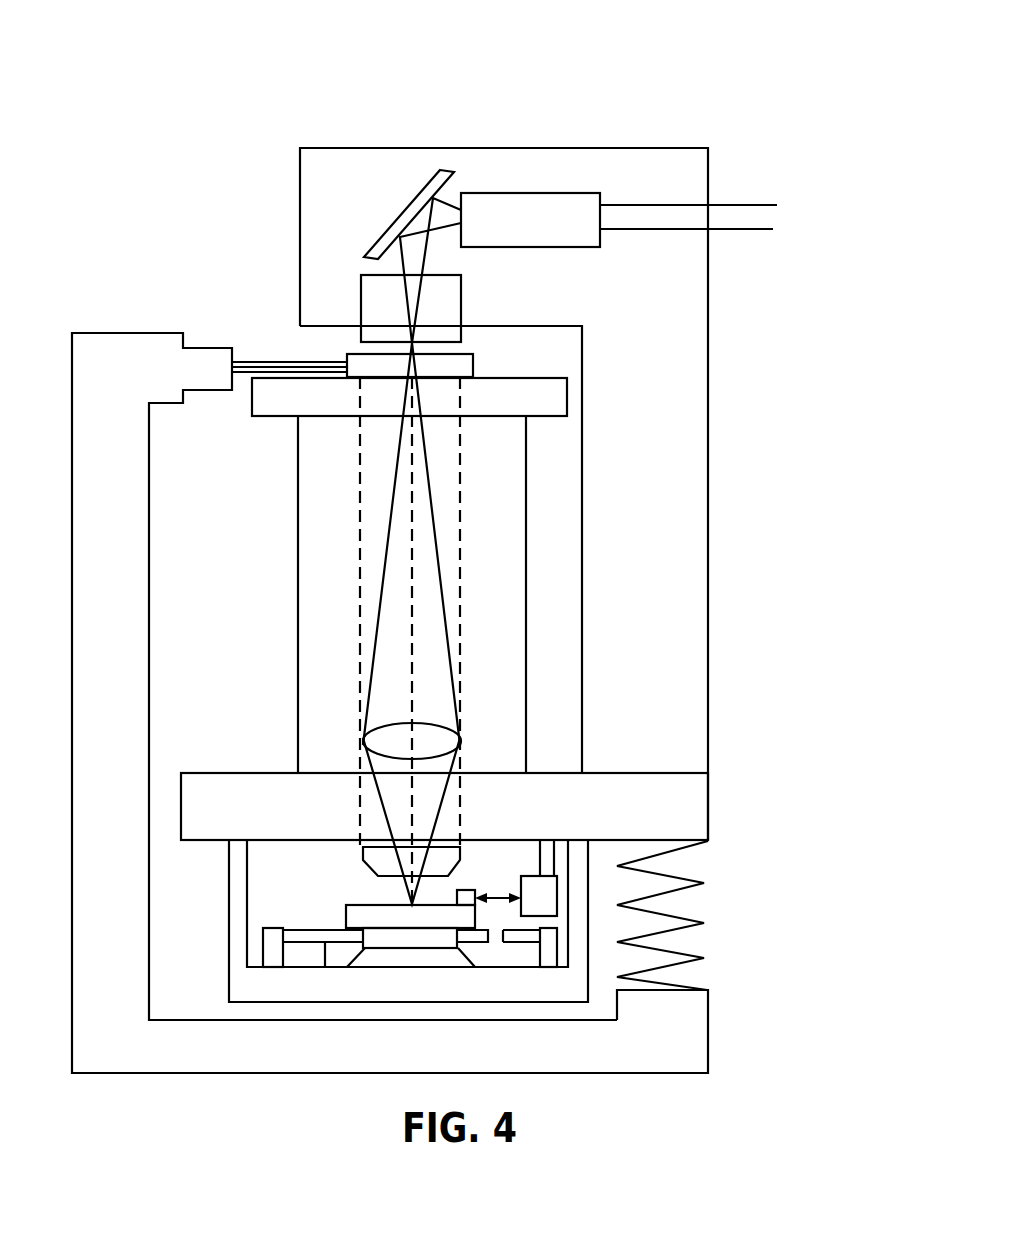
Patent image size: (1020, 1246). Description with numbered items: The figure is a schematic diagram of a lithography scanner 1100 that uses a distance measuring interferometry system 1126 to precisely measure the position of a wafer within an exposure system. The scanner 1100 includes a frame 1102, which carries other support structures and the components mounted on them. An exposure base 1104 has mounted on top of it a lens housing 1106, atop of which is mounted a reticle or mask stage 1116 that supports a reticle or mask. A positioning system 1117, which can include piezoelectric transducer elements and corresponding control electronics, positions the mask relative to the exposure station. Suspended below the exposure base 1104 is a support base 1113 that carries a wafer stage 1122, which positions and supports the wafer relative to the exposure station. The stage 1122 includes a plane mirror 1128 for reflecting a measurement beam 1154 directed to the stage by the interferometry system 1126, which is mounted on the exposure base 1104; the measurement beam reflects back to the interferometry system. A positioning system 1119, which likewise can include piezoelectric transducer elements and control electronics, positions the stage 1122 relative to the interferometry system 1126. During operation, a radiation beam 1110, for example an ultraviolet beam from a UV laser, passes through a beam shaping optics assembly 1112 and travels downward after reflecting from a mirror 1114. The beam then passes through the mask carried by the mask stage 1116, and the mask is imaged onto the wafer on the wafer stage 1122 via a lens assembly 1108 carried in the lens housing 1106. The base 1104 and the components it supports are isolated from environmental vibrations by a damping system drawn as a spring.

The lithography scanner 1100 is at (547, 92).
The frame 1102 is at (709, 1033).
The exposure base 1104 is at (710, 790).
The lens housing 1106 is at (527, 473).
The lens assembly 1108 is at (462, 595).
The radiation beam 1110 is at (782, 218).
The beam shaping optics assembly 1112 is at (554, 193).
The support base 1113 is at (303, 978).
The mirror 1114 is at (393, 222).
The mask stage 1116 is at (352, 354).
The positioning system 1117 is at (243, 373).
The positioning system 1119 is at (325, 942).
The wafer stage 1122 is at (360, 905).
The interferometry system 1126 is at (558, 897).
The plane mirror 1128 is at (474, 889).
The measurement beam 1154 is at (497, 902).